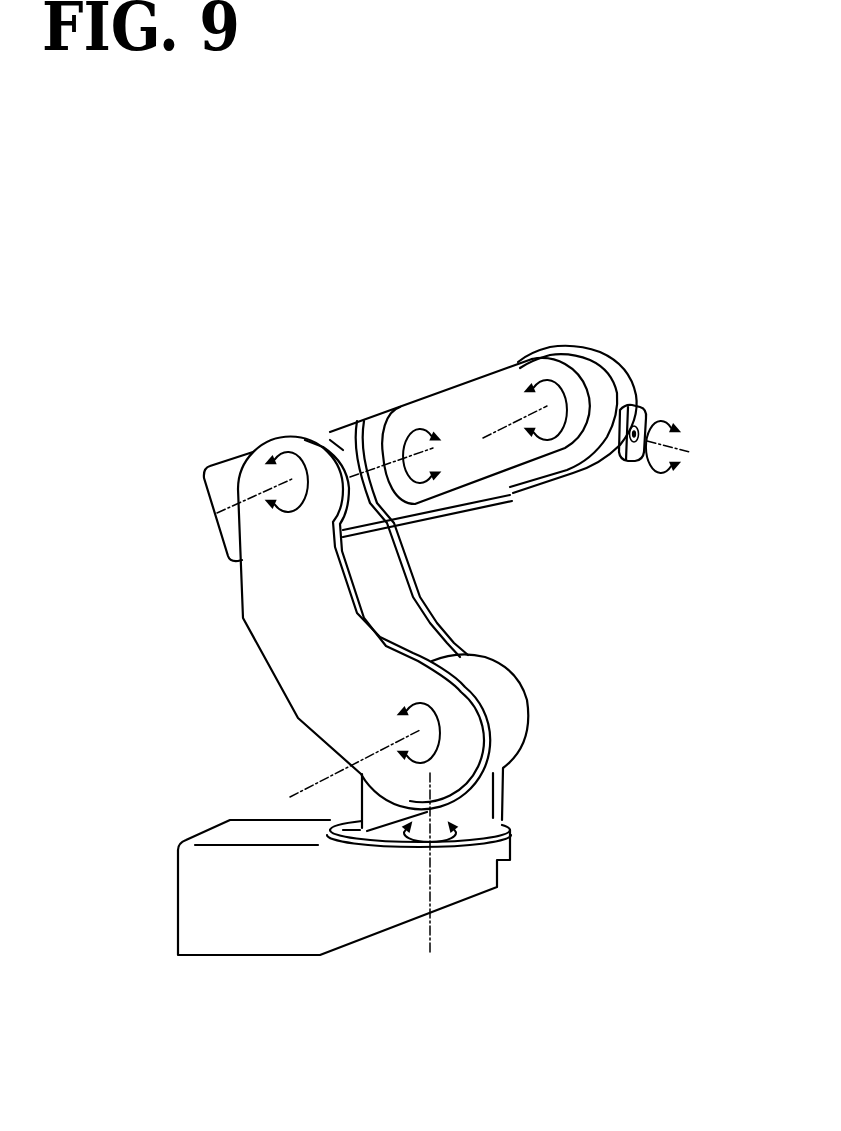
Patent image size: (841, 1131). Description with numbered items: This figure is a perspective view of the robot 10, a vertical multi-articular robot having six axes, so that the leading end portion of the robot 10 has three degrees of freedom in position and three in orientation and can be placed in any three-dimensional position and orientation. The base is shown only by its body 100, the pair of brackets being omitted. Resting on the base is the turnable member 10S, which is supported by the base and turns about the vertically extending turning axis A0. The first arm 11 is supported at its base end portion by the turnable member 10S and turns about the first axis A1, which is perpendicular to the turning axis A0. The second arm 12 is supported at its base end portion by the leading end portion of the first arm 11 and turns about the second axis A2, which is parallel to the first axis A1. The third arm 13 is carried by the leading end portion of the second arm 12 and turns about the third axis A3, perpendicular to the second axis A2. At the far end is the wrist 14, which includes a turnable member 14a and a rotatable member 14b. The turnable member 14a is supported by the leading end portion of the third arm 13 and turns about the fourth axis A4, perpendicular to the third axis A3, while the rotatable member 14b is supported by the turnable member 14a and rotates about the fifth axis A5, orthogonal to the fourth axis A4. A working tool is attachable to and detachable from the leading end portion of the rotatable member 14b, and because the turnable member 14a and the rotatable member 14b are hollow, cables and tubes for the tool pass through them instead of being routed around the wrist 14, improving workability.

The robot 10 is at (660, 582).
The body 100 is at (217, 873).
The turnable member 10S is at (510, 745).
The first arm 11 is at (290, 650).
The second arm 12 is at (223, 474).
The third arm 13 is at (490, 493).
The wrist 14 is at (691, 331).
The turnable member 14a is at (598, 367).
The rotatable member 14b is at (633, 407).
The turning axis A0 is at (433, 932).
The first axis A1 is at (367, 757).
The second axis A2 is at (267, 487).
The third axis A3 is at (400, 458).
The fourth axis A4 is at (527, 407).
The fifth axis A5 is at (690, 452).